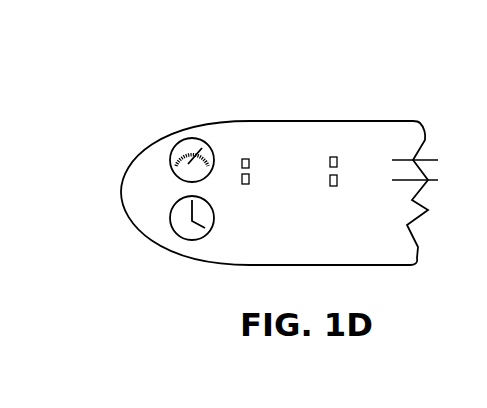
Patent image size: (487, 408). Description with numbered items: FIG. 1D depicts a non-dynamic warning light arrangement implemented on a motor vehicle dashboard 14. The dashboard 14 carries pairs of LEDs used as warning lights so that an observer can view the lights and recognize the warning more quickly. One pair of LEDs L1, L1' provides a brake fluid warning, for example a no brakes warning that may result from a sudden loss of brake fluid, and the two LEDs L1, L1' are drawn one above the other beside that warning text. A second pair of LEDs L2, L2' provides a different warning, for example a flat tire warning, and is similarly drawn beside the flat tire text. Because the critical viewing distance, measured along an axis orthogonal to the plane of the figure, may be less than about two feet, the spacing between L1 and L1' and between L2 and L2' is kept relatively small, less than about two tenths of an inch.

The motor vehicle dashboard 14 is at (178, 118).
The LED L1 is at (265, 157).
The LED L1' is at (267, 181).
The LED L2 is at (355, 156).
The LED L2' is at (357, 182).